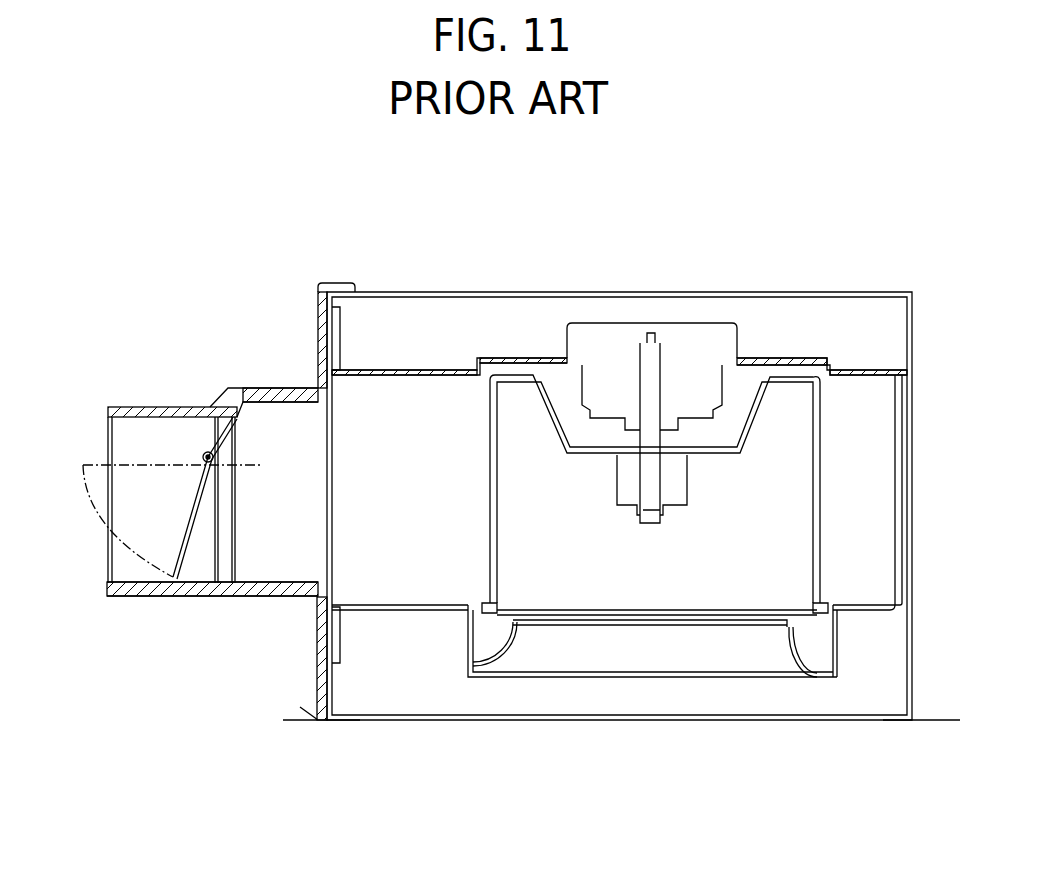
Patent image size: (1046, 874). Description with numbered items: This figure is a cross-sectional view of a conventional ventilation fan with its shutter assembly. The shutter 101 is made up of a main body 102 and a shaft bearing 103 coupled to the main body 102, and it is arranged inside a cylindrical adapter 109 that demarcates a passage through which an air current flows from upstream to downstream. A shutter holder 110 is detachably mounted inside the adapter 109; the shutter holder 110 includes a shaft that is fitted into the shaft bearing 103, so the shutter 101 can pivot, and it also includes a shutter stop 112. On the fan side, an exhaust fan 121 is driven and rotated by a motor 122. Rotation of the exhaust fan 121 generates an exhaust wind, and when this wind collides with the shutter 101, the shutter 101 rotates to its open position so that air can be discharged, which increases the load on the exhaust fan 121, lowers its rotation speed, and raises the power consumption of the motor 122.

The shutter 101 is at (135, 460).
The main body 102 is at (166, 463).
The shaft bearing 103 is at (208, 453).
The adapter 109 is at (115, 410).
The shutter holder 110 is at (222, 563).
The shutter stop 112 is at (177, 573).
The exhaust fan 121 is at (513, 383).
The motor 122 is at (698, 342).